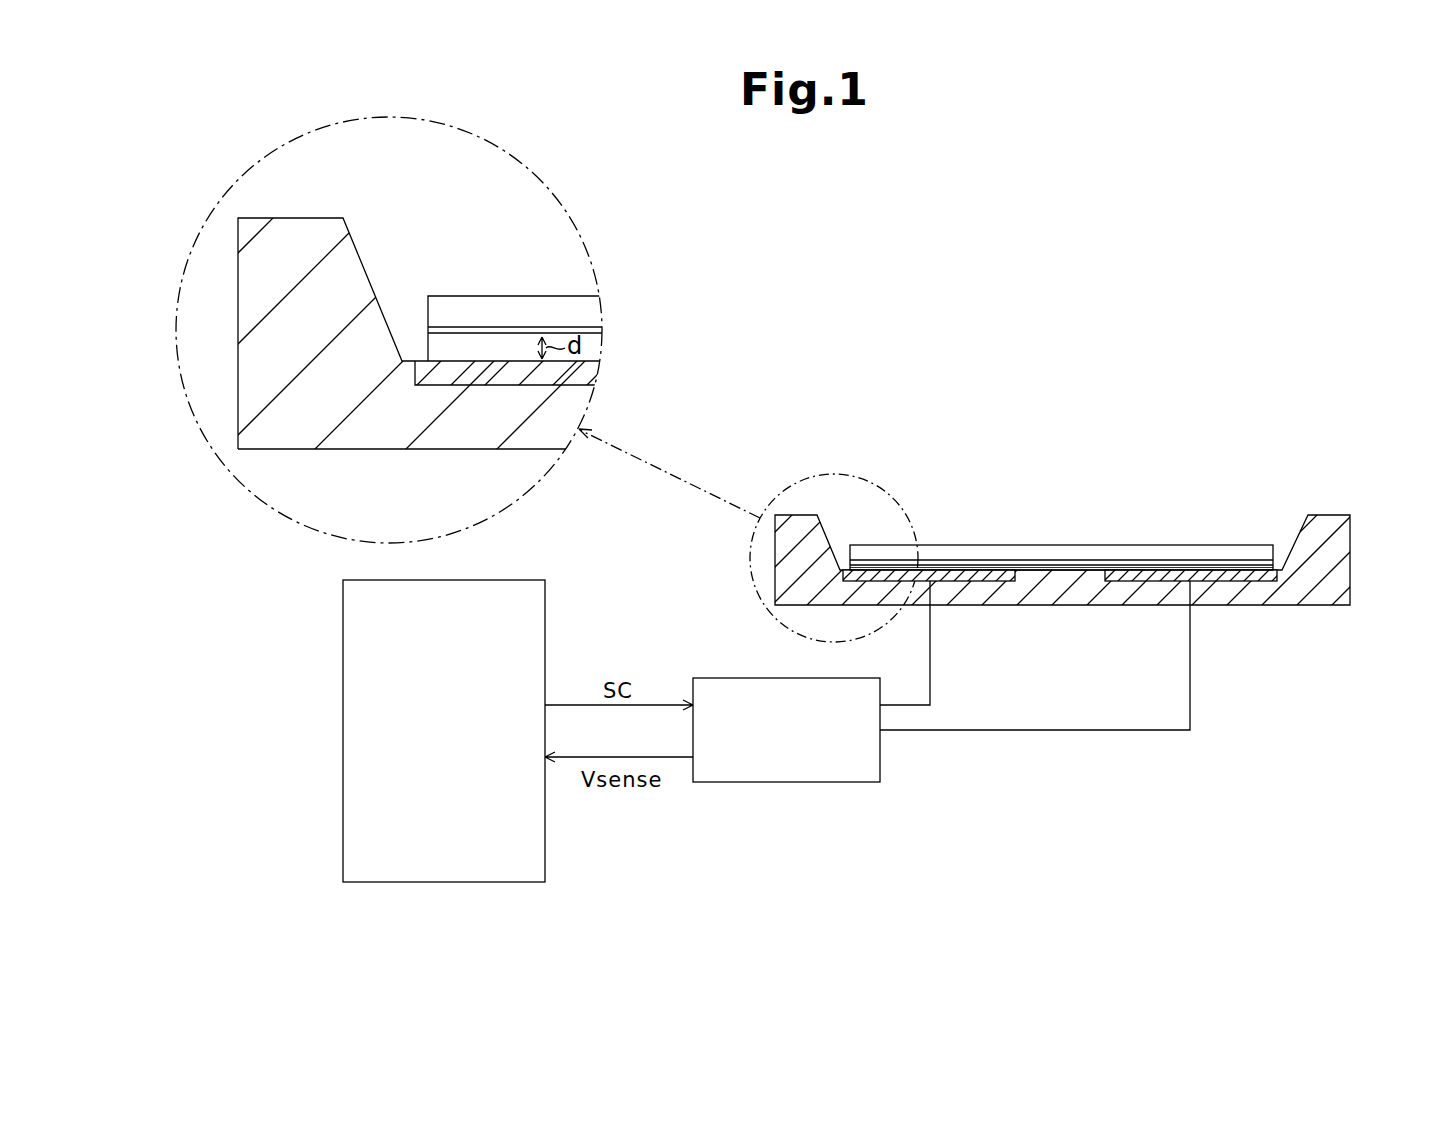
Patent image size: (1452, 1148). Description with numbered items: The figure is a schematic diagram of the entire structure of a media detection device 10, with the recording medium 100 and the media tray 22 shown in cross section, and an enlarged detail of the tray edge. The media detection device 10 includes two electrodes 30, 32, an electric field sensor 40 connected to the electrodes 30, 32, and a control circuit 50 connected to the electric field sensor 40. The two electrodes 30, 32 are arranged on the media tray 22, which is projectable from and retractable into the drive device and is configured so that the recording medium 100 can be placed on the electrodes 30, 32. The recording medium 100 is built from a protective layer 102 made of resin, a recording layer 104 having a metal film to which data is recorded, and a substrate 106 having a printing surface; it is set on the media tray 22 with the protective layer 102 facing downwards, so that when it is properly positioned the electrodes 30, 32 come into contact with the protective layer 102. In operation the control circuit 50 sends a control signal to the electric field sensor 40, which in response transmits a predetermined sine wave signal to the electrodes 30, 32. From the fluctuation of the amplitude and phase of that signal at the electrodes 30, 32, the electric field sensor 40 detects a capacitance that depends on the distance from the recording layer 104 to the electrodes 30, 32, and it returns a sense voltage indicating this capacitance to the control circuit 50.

The media detection device 10 is at (1266, 459).
The media tray 22 is at (1352, 577).
The electrode 30 is at (1113, 582).
The electrode 32 is at (997, 582).
The electric field sensor 40 is at (880, 767).
The control circuit 50 is at (545, 843).
The recording medium 100 is at (1040, 545).
The protective layer 102 is at (1195, 566).
The recording layer 104 is at (1115, 560).
The substrate 106 is at (968, 548).